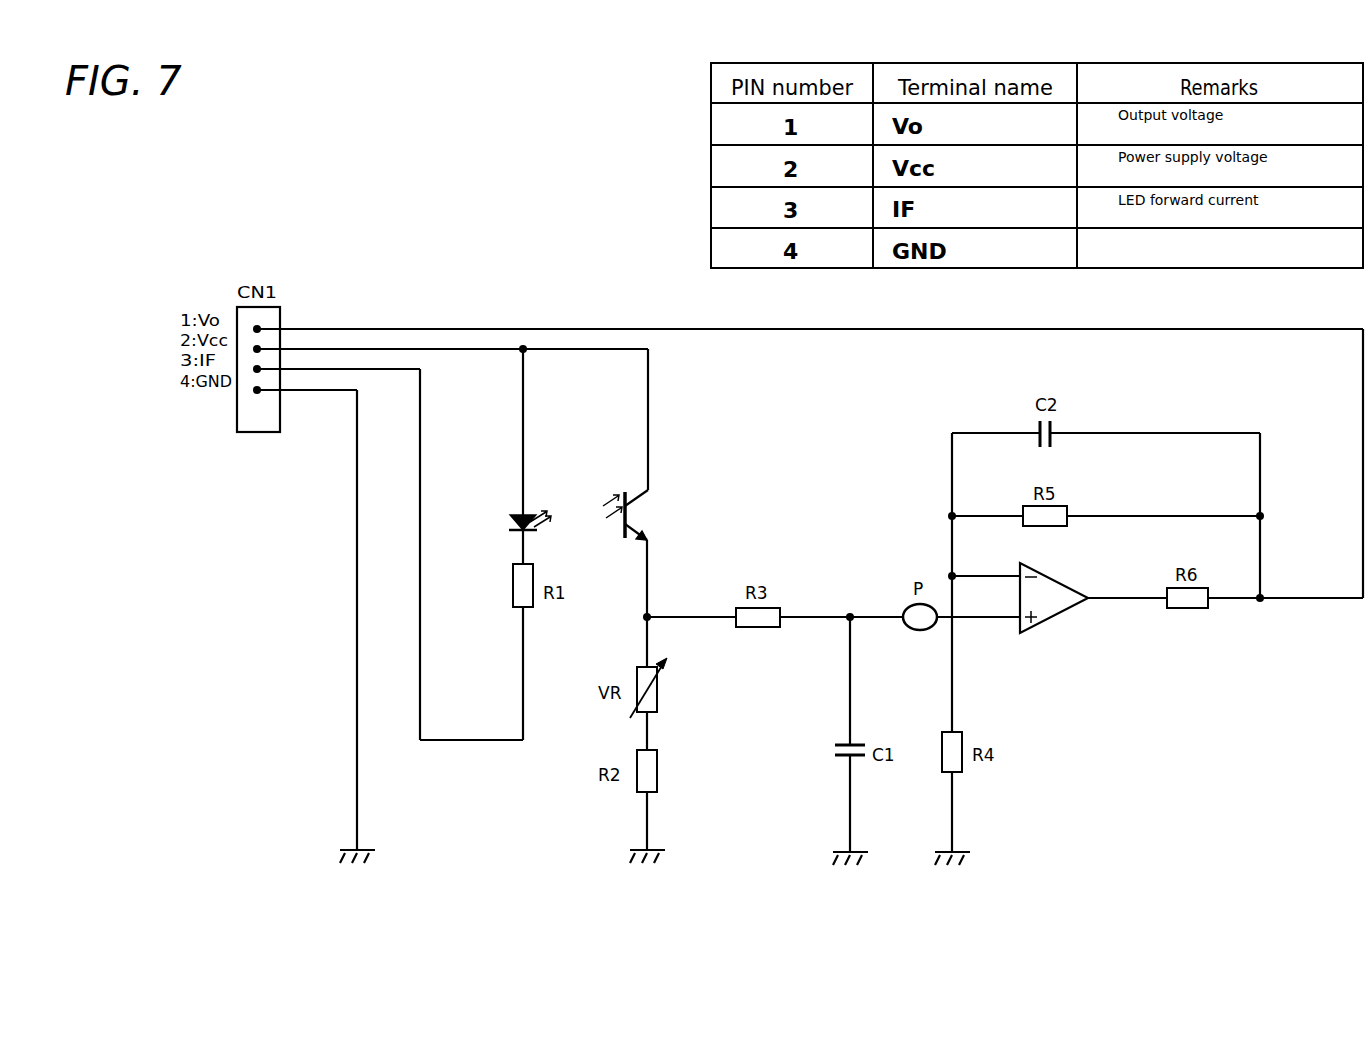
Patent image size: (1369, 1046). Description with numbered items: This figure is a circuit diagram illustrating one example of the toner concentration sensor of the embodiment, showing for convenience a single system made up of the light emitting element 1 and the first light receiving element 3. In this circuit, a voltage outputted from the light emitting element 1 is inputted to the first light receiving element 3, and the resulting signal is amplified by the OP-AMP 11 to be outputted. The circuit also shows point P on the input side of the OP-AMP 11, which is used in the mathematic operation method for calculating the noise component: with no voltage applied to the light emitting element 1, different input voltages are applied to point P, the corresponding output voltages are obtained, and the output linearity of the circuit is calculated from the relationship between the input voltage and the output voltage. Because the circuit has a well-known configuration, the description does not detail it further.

The light emitting element 1 is at (533, 512).
The first light receiving element 3 is at (636, 497).
The OP-AMP 11 is at (1052, 576).